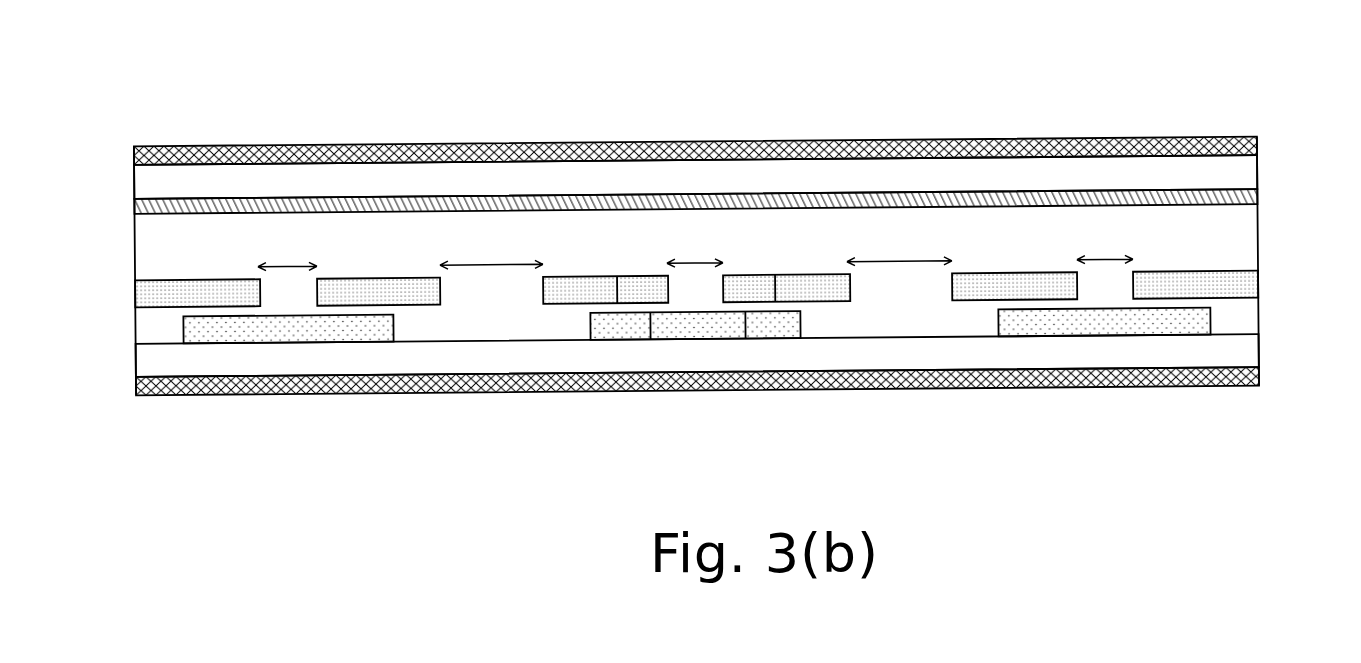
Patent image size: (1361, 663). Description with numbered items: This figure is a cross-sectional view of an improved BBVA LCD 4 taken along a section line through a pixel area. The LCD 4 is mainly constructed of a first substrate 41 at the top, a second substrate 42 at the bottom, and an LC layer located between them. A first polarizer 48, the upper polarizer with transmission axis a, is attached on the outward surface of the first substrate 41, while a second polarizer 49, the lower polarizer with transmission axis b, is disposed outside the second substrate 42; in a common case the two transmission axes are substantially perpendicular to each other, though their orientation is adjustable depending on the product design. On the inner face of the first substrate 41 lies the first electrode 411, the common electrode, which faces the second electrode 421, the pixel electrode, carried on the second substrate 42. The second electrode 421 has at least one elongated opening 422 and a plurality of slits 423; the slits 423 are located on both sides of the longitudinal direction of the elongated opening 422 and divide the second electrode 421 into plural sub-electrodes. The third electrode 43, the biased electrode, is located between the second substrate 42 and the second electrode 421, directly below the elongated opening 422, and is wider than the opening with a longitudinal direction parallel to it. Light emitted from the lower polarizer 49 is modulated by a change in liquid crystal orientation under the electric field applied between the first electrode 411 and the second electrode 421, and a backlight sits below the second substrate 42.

The LCD 4 is at (1106, 33).
The first polarizer 48 is at (1247, 145).
The first substrate 41 is at (1243, 179).
The first electrode 411 is at (1245, 198).
The second electrode 421 is at (198, 290).
The elongated opening 422 is at (288, 265).
The slits 423 is at (494, 265).
The third electrode 43 is at (198, 332).
The second substrate 42 is at (1242, 348).
The second polarizer 49 is at (1243, 378).